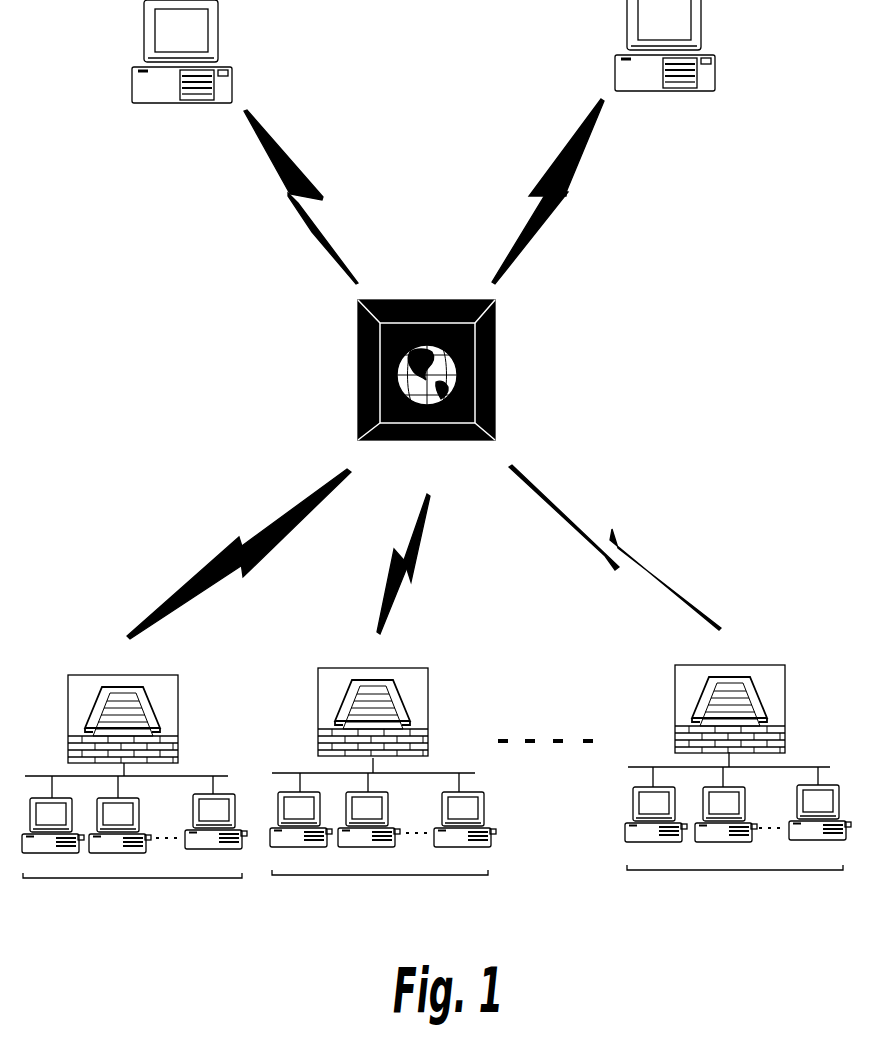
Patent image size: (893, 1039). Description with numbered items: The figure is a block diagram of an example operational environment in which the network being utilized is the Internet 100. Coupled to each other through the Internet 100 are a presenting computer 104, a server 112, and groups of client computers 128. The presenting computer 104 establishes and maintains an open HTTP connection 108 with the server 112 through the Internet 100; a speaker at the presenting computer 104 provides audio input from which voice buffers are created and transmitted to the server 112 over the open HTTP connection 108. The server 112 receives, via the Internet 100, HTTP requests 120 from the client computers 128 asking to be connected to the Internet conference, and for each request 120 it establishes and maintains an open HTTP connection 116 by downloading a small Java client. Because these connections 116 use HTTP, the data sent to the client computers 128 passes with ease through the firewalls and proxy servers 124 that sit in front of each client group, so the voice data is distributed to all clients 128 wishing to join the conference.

The Internet 100 is at (358, 376).
The presenting computer 104 is at (614, 66).
The open HTTP connection 108 is at (562, 152).
The server 112 is at (130, 80).
The open HTTP connection 116 is at (292, 160).
The HTTP request 120 is at (318, 250).
The firewall and proxy server 124 is at (181, 728).
The client computer 128 is at (187, 880).